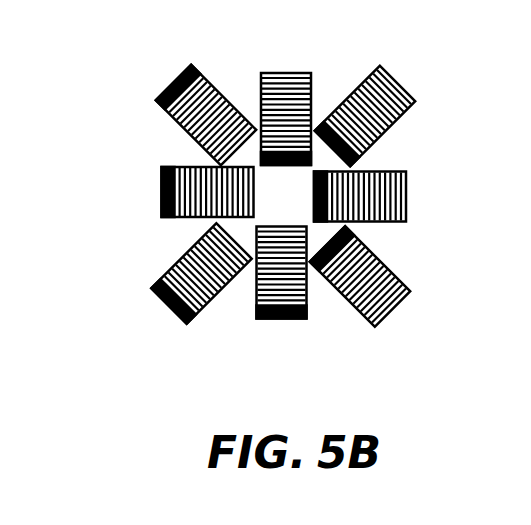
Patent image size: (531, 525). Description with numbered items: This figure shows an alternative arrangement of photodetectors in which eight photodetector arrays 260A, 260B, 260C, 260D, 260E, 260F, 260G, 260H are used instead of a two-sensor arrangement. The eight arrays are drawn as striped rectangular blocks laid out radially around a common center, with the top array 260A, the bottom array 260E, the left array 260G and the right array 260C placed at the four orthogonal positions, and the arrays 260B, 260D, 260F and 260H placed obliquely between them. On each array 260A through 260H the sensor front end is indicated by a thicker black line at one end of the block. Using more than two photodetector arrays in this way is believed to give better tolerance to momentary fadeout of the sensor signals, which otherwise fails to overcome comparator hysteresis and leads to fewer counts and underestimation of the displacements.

The photodetector array 260A is at (283, 73).
The photodetector array 260B is at (392, 80).
The photodetector array 260C is at (405, 193).
The photodetector array 260D is at (393, 312).
The photodetector array 260E is at (278, 320).
The photodetector array 260F is at (163, 310).
The photodetector array 260G is at (162, 193).
The photodetector array 260H is at (165, 90).